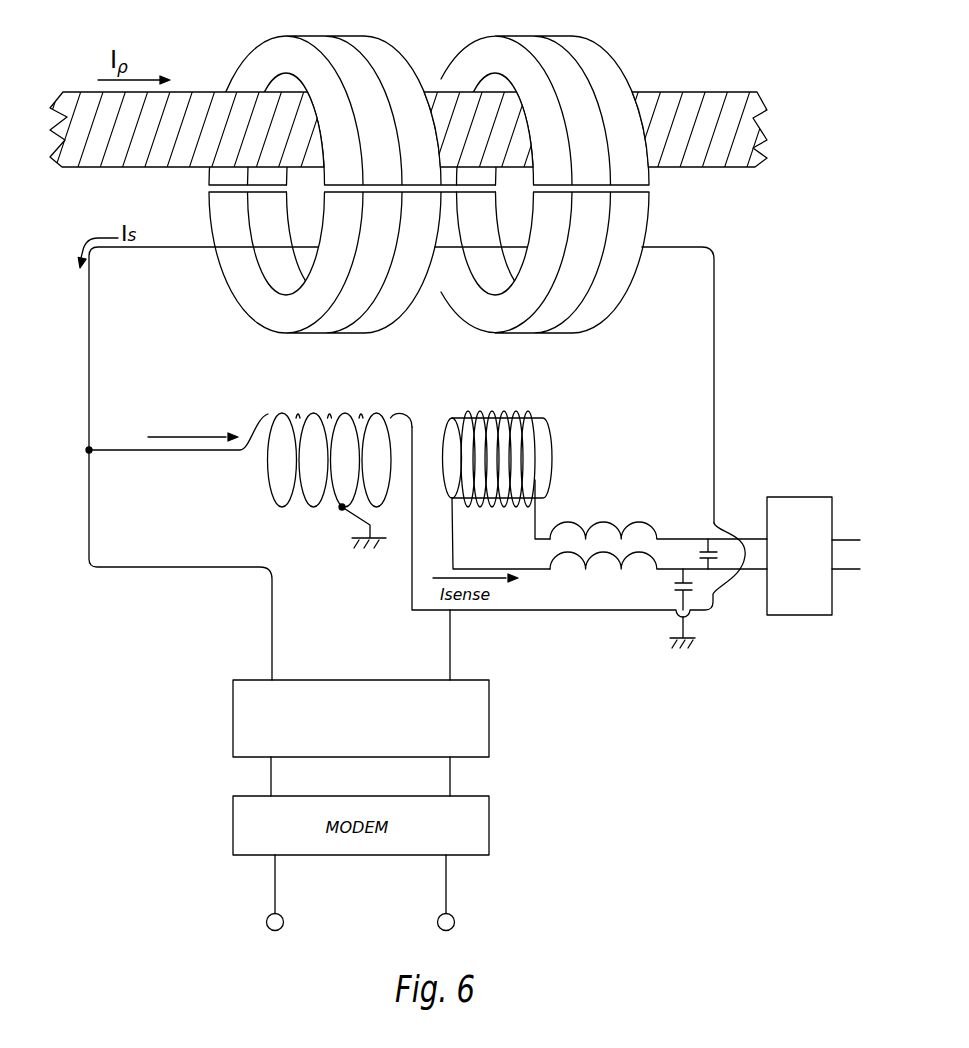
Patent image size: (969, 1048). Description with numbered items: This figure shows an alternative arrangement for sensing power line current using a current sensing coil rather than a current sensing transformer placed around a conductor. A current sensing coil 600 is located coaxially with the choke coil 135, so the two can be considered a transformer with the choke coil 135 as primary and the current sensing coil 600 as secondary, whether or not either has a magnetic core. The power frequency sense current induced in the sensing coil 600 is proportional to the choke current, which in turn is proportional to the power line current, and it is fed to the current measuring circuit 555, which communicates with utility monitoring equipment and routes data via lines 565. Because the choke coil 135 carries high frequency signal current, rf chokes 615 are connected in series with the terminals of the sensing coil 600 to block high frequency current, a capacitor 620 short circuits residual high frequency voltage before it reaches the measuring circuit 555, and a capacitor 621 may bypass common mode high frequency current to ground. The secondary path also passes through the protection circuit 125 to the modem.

The choke coil 135 is at (333, 515).
The current sensing coil 600 is at (545, 395).
The rf chokes 615 is at (563, 570).
The capacitor 620 is at (689, 546).
The capacitor 621 is at (662, 600).
The current measuring circuit 555 is at (800, 617).
The lines 565 is at (845, 577).
The protection circuit 125 is at (500, 719).